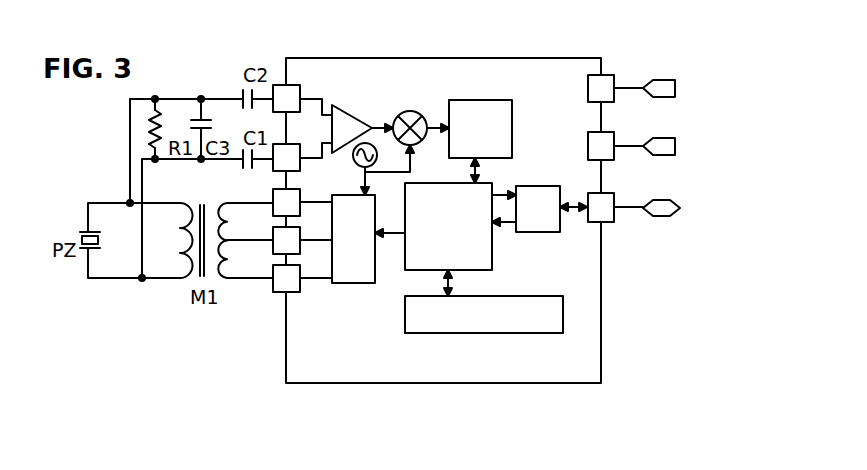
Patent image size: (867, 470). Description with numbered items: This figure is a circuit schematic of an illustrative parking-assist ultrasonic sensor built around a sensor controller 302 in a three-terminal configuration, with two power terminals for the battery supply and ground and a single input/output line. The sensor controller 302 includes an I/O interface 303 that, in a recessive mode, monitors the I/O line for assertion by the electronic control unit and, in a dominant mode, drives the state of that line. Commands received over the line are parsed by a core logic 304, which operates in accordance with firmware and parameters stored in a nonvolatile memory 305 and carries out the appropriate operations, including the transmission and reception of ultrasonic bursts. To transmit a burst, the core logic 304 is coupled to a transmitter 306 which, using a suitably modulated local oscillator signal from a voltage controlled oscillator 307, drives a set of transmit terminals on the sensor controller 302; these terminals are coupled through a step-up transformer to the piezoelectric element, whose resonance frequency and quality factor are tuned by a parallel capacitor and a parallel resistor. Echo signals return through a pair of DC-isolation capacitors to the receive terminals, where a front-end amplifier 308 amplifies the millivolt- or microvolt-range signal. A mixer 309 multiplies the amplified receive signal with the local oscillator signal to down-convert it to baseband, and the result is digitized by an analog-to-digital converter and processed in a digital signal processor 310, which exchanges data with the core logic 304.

The sensor controller 302 is at (554, 58).
The I/O interface 303 is at (543, 232).
The core logic 304 is at (492, 238).
The nonvolatile memory 305 is at (518, 333).
The transmitter 306 is at (340, 283).
The voltage controlled oscillator 307 is at (356, 166).
The front-end amplifier 308 is at (343, 106).
The mixer 309 is at (403, 111).
The analog-to-digital converter and digital signal processor 310 is at (466, 99).